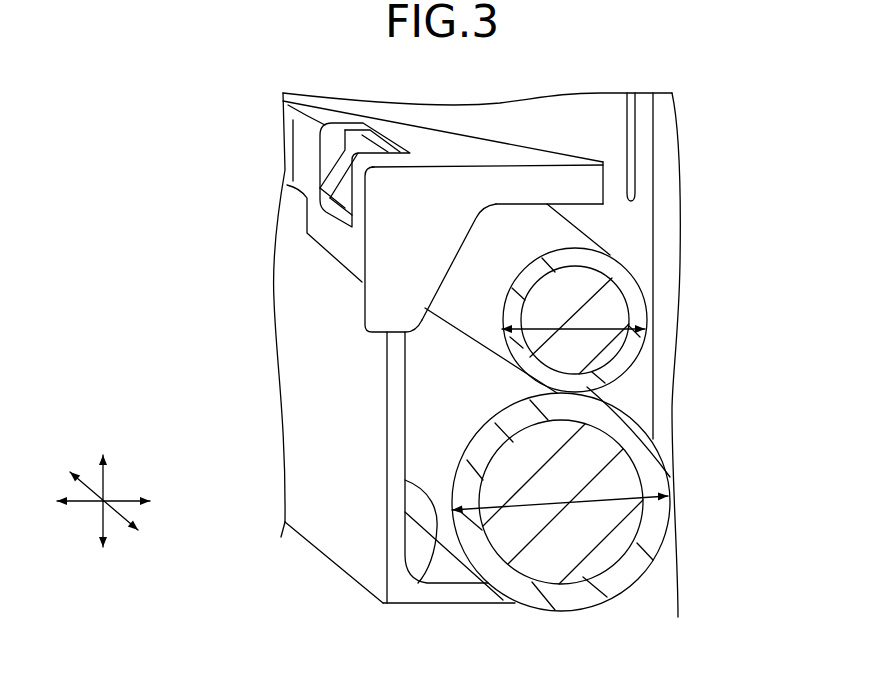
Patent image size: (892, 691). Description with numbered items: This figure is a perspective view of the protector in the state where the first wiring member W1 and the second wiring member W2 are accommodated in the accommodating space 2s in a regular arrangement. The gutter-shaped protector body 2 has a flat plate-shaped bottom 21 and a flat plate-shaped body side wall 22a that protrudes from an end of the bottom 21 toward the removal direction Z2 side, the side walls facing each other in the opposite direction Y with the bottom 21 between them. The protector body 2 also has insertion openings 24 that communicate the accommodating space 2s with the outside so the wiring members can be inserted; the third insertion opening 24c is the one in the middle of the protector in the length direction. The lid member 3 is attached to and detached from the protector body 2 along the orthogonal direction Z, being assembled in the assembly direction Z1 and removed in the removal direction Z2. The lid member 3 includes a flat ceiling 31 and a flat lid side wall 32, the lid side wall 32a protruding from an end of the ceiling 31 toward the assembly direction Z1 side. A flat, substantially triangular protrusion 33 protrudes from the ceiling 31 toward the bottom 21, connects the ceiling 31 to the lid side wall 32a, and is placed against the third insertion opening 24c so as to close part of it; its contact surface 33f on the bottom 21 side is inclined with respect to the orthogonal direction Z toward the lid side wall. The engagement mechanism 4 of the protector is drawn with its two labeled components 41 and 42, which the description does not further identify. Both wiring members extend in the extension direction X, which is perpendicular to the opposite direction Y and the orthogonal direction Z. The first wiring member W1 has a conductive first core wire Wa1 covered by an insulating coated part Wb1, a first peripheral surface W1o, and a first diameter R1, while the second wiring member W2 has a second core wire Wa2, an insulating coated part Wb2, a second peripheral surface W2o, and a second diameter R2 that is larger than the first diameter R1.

The protector body 2 is at (307, 537).
The accommodating space 2s is at (417, 537).
The bottom 21 is at (445, 570).
The body side wall 22a is at (350, 530).
The insertion opening 24 is at (434, 530).
The third insertion opening 24c is at (415, 578).
The lid member 3 is at (522, 195).
The ceiling 31 is at (445, 150).
The lid side wall 32 is at (303, 148).
The lid side wall 32a is at (253, 175).
The protrusion 33 is at (407, 273).
The contact surface 33f is at (468, 248).
The engagement mechanism 4 is at (239, 236).
The bolt head 41 is at (323, 188).
The bolt shaft 42 is at (333, 240).
The first wiring member W1 is at (662, 320).
The first peripheral surface W1o is at (583, 327).
The first core wire Wa1 is at (565, 357).
The insulating coated part Wb1 is at (603, 367).
The first diameter R1 is at (550, 268).
The second wiring member W2 is at (637, 509).
The second peripheral surface W2o is at (645, 502).
The second core wire Wa2 is at (610, 537).
The insulating coated part Wb2 is at (610, 577).
The second diameter R2 is at (600, 492).
The extension direction X is at (118, 512).
The opposite direction Y is at (83, 507).
The orthogonal direction Z is at (145, 513).
The assembly direction Z1 is at (107, 523).
The removal direction Z2 is at (107, 475).